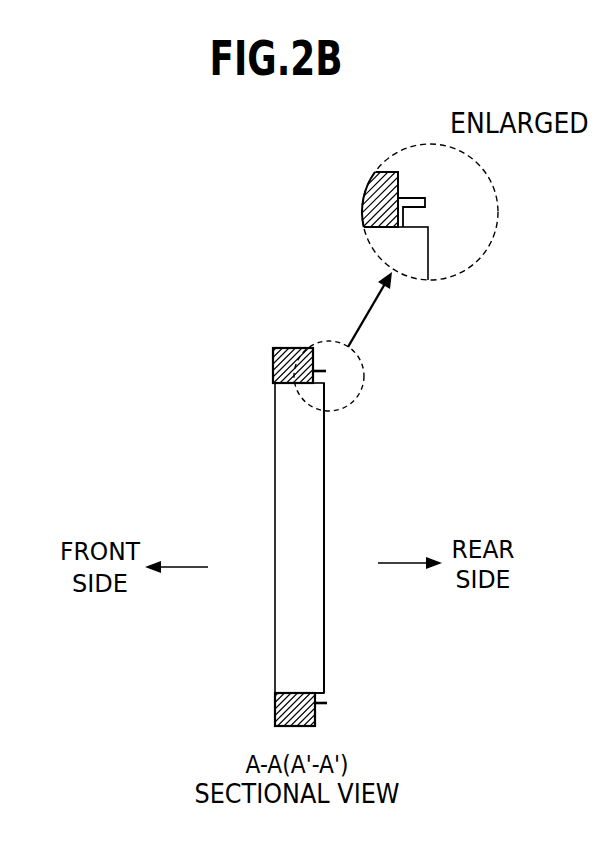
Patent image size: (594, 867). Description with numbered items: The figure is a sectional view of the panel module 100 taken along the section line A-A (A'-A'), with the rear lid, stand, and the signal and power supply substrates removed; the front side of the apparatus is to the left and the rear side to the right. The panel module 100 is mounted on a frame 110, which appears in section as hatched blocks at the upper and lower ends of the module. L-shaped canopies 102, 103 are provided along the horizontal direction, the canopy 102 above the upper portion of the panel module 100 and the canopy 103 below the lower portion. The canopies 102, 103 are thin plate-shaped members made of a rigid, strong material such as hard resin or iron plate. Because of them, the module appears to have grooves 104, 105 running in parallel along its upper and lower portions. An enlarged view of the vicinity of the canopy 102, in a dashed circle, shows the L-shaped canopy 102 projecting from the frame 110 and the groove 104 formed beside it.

The panel module 100 is at (287, 510).
The canopy 102 is at (312, 368).
The canopy 103 is at (328, 704).
The groove 104 is at (325, 373).
The groove 105 is at (327, 693).
The frame 110 is at (273, 357).